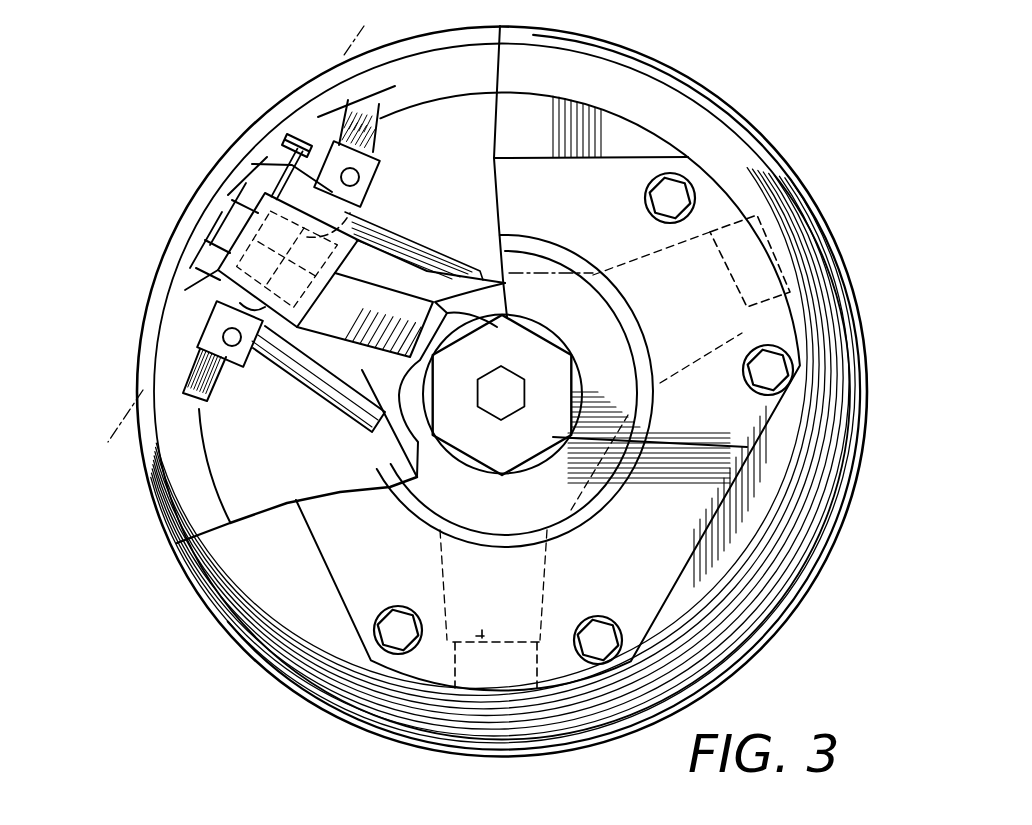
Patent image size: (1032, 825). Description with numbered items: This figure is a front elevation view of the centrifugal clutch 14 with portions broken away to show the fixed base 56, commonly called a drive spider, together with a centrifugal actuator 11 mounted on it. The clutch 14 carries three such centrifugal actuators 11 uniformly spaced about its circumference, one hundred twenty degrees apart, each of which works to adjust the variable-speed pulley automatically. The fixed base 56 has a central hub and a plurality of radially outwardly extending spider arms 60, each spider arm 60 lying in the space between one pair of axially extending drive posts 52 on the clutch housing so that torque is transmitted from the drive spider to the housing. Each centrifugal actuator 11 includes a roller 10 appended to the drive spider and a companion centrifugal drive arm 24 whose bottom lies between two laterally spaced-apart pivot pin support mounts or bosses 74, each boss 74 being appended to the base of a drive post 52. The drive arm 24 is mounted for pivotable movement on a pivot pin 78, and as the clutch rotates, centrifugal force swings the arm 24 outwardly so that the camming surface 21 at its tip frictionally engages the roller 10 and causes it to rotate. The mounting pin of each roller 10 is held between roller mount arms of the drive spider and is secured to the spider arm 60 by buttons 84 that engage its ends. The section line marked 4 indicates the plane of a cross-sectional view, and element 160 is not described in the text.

The roller 10 is at (380, 212).
The centrifugal actuator 11 is at (167, 226).
The centrifugal clutch 14 is at (719, 85).
The camming surface 21 is at (357, 305).
The centrifugal drive arm 24 is at (202, 192).
The drive post 52 is at (381, 170).
The fixed base 56 is at (523, 204).
The spider arm 60 is at (348, 341).
The pivot pin support mount 74 is at (252, 126).
The pivot pin 78 is at (228, 152).
The button 84 is at (222, 288).
The spring 160 is at (190, 330).
The section line 4- 4 is at (420, 67).